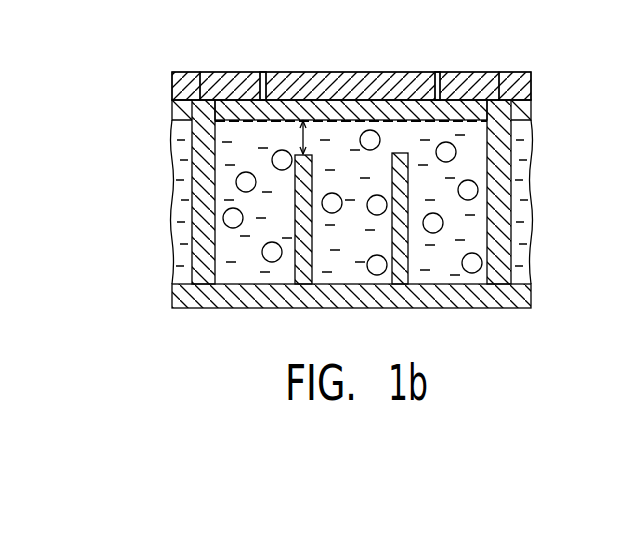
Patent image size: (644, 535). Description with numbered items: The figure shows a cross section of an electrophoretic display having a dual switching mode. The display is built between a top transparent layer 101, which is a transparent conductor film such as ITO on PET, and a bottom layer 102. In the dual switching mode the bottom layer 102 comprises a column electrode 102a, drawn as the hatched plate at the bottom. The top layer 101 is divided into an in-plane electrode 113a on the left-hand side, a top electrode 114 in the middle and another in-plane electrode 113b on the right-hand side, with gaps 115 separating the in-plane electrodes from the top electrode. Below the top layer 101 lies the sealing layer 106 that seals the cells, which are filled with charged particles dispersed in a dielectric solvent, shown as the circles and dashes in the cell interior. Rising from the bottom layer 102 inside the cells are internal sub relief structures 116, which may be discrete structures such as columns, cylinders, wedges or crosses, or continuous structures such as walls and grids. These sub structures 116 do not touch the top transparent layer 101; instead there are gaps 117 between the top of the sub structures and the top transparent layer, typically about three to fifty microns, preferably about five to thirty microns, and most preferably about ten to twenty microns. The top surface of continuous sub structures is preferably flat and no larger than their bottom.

The top transparent layer 101 is at (546, 82).
The bottom layer 102 is at (396, 219).
The column electrode 102a is at (463, 293).
The sealing layer 106 is at (382, 107).
The in-plane electrode 113a is at (217, 83).
The in-plane electrode 113b is at (487, 70).
The top electrode 114 is at (333, 82).
The gaps 115 is at (262, 72).
The internal sub relief structures 116 is at (298, 253).
The gaps 117 is at (300, 138).